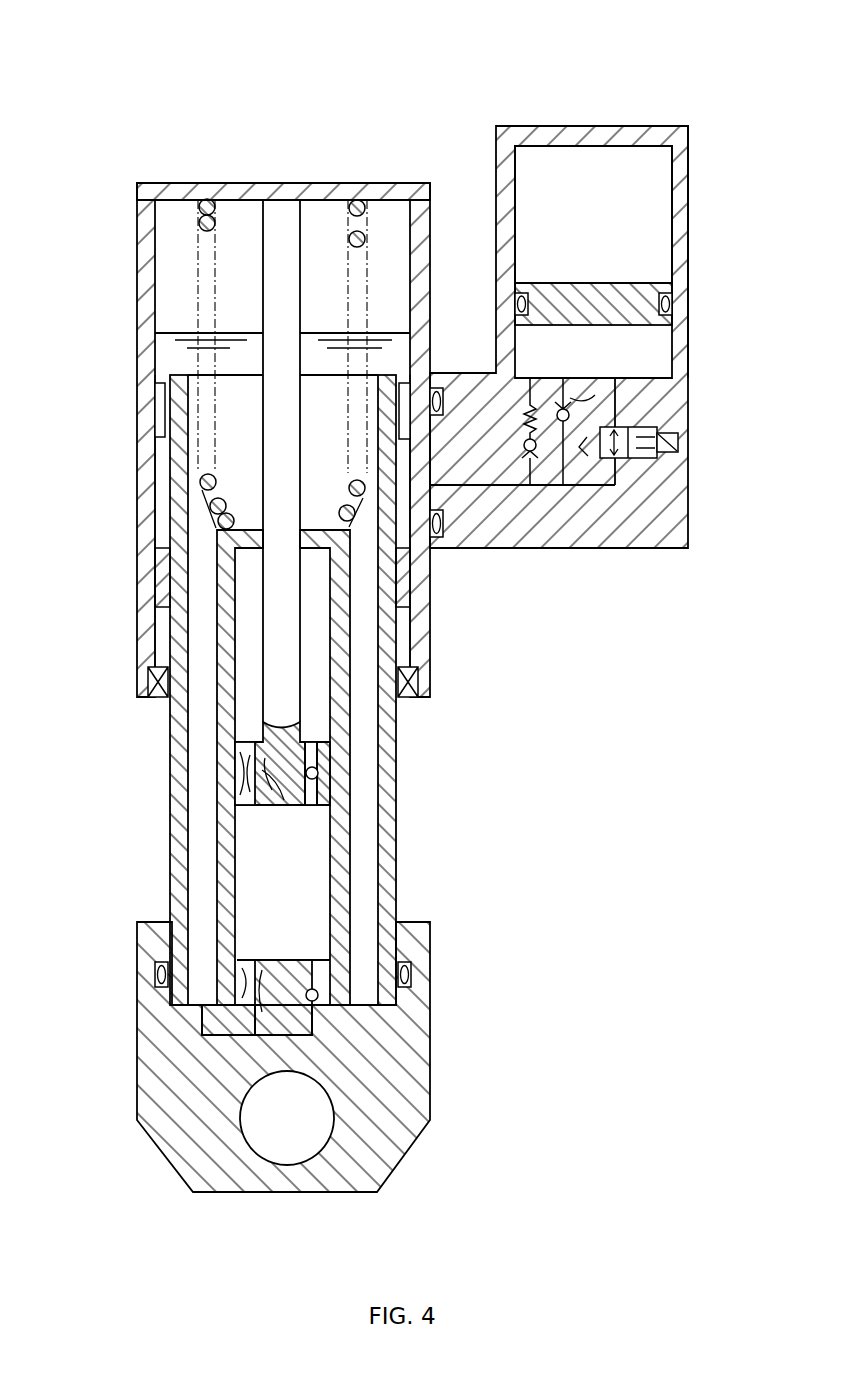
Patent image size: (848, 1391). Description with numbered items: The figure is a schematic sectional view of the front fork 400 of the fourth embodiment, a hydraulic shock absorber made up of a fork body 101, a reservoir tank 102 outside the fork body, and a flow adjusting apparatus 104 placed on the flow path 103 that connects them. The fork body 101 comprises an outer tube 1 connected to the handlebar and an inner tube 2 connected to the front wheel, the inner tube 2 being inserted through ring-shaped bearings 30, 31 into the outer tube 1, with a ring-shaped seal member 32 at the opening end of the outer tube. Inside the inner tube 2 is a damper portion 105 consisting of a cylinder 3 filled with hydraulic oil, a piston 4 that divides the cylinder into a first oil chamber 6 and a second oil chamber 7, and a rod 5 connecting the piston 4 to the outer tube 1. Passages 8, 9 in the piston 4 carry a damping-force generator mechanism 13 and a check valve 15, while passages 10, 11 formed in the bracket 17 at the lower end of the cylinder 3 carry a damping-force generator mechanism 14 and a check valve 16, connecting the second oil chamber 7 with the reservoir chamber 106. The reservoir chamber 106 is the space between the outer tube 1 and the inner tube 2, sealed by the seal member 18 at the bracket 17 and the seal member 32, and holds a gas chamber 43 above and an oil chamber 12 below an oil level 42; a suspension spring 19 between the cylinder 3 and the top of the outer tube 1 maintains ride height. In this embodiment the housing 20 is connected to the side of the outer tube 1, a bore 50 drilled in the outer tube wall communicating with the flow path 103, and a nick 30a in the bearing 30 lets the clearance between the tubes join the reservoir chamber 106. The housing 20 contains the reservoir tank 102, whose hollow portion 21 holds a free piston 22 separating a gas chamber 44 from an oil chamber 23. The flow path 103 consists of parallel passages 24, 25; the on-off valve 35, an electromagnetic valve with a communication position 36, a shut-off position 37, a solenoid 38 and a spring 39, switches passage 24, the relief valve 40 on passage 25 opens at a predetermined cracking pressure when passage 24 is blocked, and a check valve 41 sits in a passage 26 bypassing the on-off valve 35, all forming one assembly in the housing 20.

The outer tube 1 is at (215, 196).
The inner tube 2 is at (178, 863).
The cylinder 3 is at (227, 578).
The piston 4 is at (263, 742).
The rod 5 is at (283, 215).
The first oil chamber 6 is at (310, 664).
The second oil chamber 7 is at (250, 909).
The passage 8 is at (256, 807).
The passage 9 is at (314, 752).
The passage 10 is at (273, 1017).
The passage 11 is at (273, 1037).
The oil chamber 12 is at (258, 372).
The damping-force generator mechanism 13 is at (287, 807).
The damping-force generator mechanism 14 is at (240, 1007).
The check valve 15 is at (314, 786).
The check valve 16 is at (312, 987).
The bracket 17 is at (405, 1132).
The seal member 18 is at (155, 967).
The suspension spring 19 is at (200, 222).
The housing 20 is at (590, 138).
The hollow portion 21 is at (516, 180).
The free piston 22 is at (650, 290).
The oil chamber 23 is at (576, 362).
The passage 24 is at (618, 462).
The passage 25 is at (530, 470).
The passage 26 is at (563, 470).
The bearing 30 is at (150, 420).
The nick 30a is at (158, 395).
The bearing 31 is at (160, 595).
The seal member 32 is at (150, 682).
The on-off valve 35 is at (659, 466).
The communication position 36 is at (642, 490).
The shut-off position 37 is at (660, 432).
The solenoid 38 is at (679, 447).
The spring 39 is at (582, 442).
The relief valve 40 is at (522, 440).
The check valve 41 is at (573, 402).
The oil level 42 is at (168, 333).
The gas chamber 43 is at (227, 276).
The gas chamber 44 is at (576, 232).
The bore 50 is at (433, 548).
The fork body 101 is at (339, 165).
The reservoir tank 102 is at (654, 138).
The flow path 103 is at (497, 494).
The flow adjusting apparatus 104 is at (642, 496).
The damper portion 105 is at (213, 770).
The reservoir chamber 106 is at (168, 216).
The front fork 400 is at (448, 104).